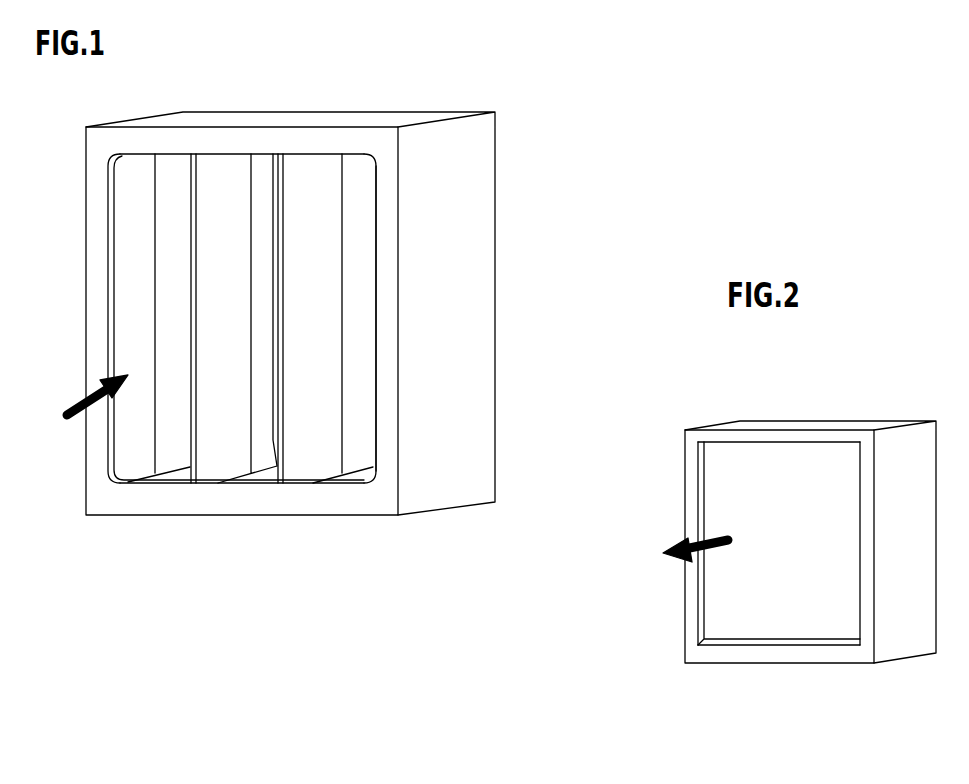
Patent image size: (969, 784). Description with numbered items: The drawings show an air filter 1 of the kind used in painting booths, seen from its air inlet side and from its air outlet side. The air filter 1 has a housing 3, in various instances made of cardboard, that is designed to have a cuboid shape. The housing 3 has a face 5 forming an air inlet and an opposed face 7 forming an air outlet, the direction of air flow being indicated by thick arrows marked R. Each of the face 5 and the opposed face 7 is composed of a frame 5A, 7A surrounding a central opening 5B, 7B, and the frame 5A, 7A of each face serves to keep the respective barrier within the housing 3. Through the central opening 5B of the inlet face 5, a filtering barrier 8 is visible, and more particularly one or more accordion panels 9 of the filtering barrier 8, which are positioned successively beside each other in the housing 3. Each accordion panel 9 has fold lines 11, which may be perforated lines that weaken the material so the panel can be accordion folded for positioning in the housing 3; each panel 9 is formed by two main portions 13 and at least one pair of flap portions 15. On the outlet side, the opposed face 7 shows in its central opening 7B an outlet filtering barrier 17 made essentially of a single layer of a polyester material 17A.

In FIG. 1, the air filter 1 is at (526, 110).
In FIG. 2, the air filter 1 is at (676, 407).
In FIG. 1, the housing 3 is at (410, 521).
In FIG. 2, the housing 3 is at (675, 487).
In FIG. 1, the face 5 is at (142, 493).
In FIG. 1, the frame 5A is at (287, 150).
In FIG. 1, the central opening 5B is at (260, 484).
In FIG. 1, the filtering barrier 8 is at (380, 358).
In FIG. 1, the accordion panel 9 is at (318, 165).
In FIG. 1, the fold line 11 is at (192, 158).
In FIG. 1, the main portion 13 is at (159, 318).
In FIG. 1, the flap portion 15 is at (242, 318).
In FIG. 2, the opposed face 7 is at (827, 656).
In FIG. 2, the frame 7A is at (798, 436).
In FIG. 2, the central opening 7B is at (708, 644).
In FIG. 2, the outlet filtering barrier 17 is at (695, 591).
In FIG. 2, the polyester material 17A is at (774, 554).